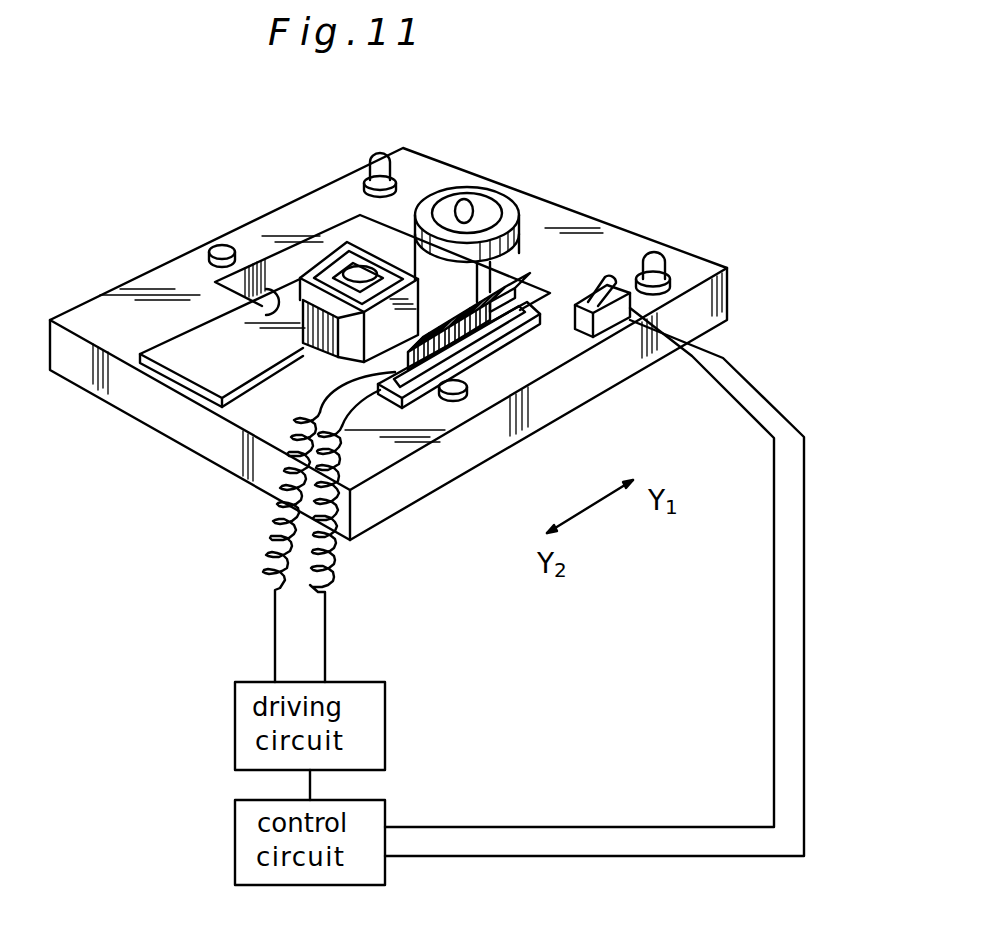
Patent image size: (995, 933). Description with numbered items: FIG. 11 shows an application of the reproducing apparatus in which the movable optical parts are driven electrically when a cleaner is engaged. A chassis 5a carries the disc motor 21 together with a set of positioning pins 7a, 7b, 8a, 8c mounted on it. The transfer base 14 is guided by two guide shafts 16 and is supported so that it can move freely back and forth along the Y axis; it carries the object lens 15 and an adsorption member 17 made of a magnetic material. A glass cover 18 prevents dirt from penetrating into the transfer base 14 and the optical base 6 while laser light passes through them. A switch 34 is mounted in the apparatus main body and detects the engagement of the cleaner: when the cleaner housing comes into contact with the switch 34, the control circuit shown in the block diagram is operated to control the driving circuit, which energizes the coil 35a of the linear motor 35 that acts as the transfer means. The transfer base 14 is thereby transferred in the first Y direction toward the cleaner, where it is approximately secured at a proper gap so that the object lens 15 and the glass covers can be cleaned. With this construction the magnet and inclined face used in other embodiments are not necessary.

The optical base 6 is at (194, 364).
The glass cover 18 is at (221, 392).
The guide shaft 16 is at (270, 292).
The transfer base 14 is at (300, 250).
The adsorption member 17 is at (310, 264).
The object lens 15 is at (371, 268).
The disc motor 21 is at (509, 209).
The coil 35a is at (448, 317).
The scale 35 is at (518, 288).
The switch 34 is at (614, 268).
The positioning pin 7a is at (379, 157).
The positioning pin 7b is at (653, 255).
The positioning pin 8a is at (222, 246).
The positioning pin 8c is at (461, 398).
The chassis 5a is at (274, 484).